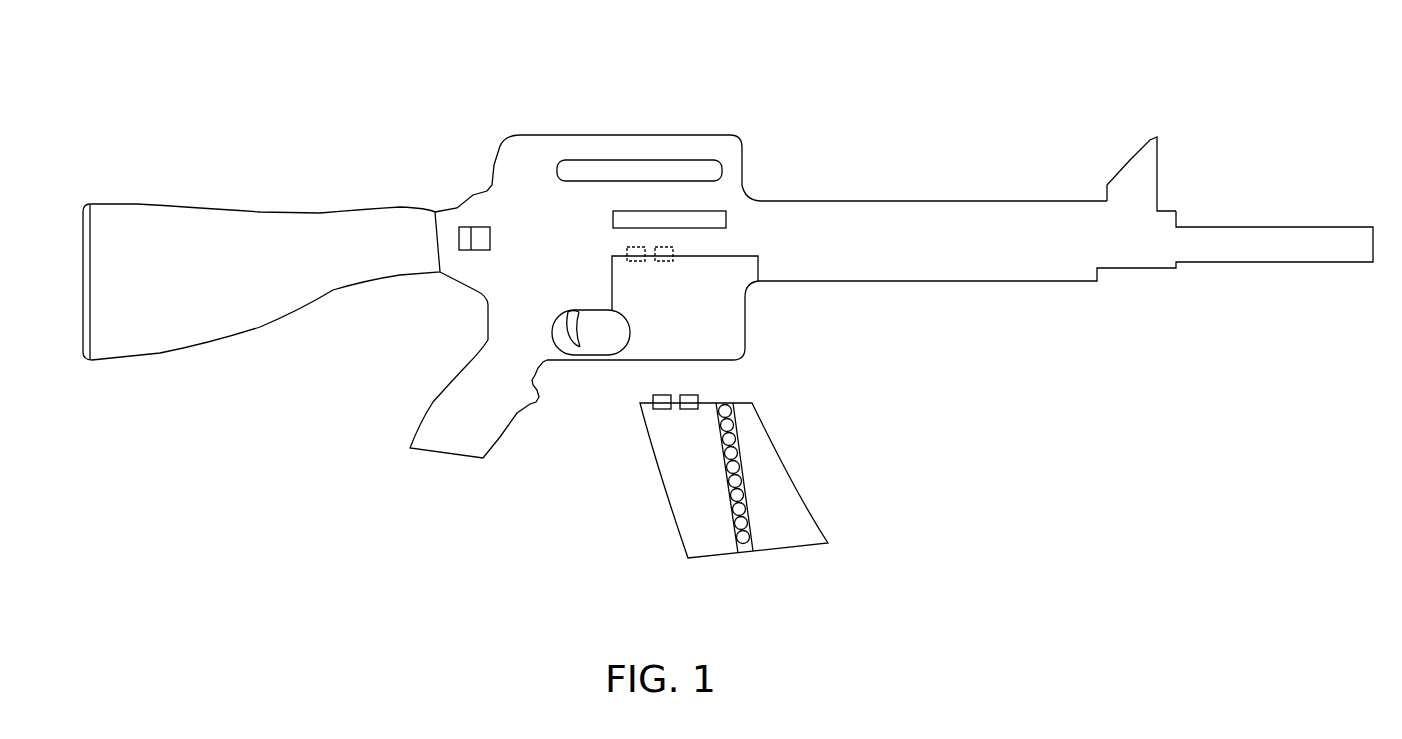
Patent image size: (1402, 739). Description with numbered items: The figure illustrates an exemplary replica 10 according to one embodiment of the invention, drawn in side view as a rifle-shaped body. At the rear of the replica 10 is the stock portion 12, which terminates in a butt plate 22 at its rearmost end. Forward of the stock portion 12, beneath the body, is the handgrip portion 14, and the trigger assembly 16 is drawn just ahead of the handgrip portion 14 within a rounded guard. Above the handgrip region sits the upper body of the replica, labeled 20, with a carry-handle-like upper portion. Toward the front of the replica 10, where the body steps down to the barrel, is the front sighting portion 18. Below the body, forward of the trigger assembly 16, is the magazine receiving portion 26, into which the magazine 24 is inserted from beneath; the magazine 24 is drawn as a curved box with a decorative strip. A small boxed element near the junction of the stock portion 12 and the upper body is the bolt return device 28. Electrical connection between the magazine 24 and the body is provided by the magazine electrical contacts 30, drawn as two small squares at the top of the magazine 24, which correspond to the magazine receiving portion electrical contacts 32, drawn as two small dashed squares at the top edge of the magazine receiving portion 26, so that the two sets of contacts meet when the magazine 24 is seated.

The replica 10 is at (865, 150).
The stock portion 12 is at (272, 208).
The handgrip portion 14 is at (420, 424).
The trigger assembly 16 is at (588, 333).
The front sighting portion 18 is at (1163, 139).
The upper receiver 20 is at (602, 137).
The butt plate 22 is at (80, 231).
The magazine 24 is at (792, 488).
The magazine receiving portion 26 is at (718, 305).
The bolt return device 28 is at (470, 227).
The magazine electrical contacts 30 is at (670, 385).
The magazine receiving portion electrical contacts 32 is at (625, 255).